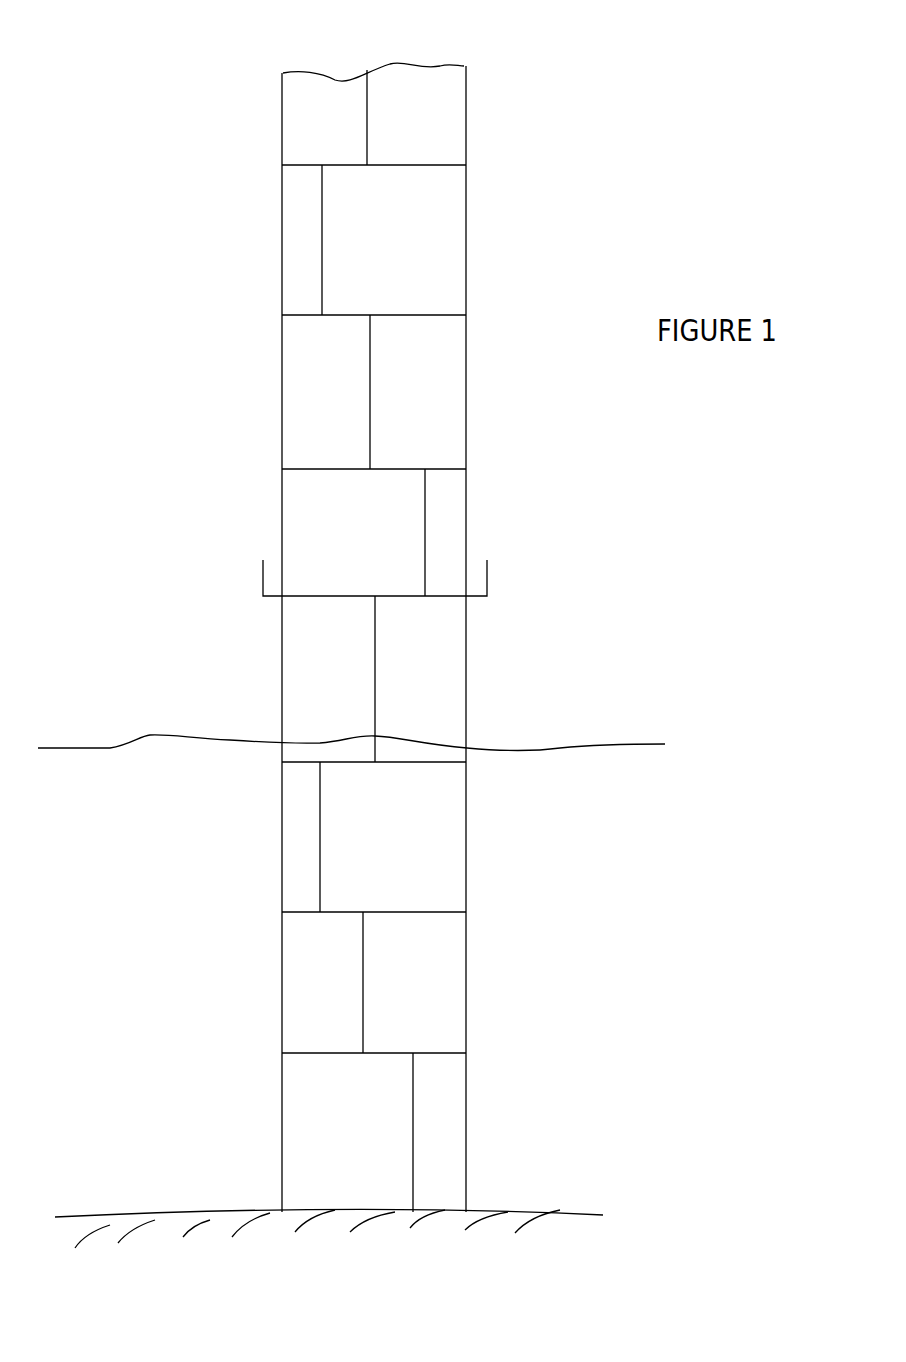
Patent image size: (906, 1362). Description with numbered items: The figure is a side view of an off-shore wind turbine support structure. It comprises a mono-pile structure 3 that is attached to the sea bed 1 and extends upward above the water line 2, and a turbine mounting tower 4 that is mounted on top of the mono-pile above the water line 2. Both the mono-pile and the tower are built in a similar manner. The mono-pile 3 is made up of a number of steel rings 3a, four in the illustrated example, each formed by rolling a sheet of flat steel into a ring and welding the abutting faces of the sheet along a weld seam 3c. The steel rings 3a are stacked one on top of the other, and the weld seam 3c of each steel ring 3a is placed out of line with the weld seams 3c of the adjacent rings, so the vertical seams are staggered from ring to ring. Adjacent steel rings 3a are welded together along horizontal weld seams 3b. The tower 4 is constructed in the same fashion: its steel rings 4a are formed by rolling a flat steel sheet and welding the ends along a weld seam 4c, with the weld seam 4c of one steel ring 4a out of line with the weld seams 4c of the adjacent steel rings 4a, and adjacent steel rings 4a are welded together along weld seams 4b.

The sea bed 1 is at (552, 1185).
The water line 2 is at (625, 740).
The mono-pile structure 3 is at (505, 870).
The steel rings 3a is at (467, 673).
The weld seams 3b is at (295, 762).
The weld seam 3c is at (375, 668).
The turbine mounting tower 4 is at (503, 316).
The steel rings 4a is at (485, 144).
The weld seams 4b is at (290, 318).
The weld seam 4c is at (367, 108).